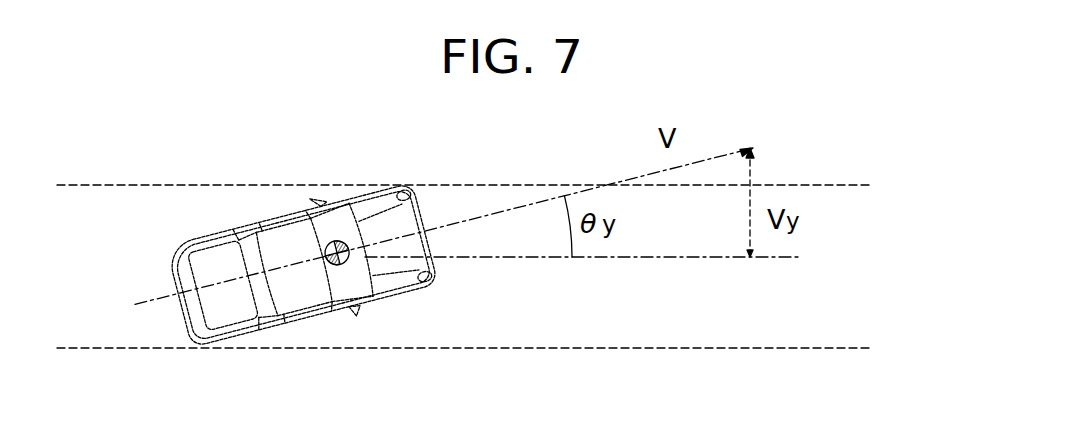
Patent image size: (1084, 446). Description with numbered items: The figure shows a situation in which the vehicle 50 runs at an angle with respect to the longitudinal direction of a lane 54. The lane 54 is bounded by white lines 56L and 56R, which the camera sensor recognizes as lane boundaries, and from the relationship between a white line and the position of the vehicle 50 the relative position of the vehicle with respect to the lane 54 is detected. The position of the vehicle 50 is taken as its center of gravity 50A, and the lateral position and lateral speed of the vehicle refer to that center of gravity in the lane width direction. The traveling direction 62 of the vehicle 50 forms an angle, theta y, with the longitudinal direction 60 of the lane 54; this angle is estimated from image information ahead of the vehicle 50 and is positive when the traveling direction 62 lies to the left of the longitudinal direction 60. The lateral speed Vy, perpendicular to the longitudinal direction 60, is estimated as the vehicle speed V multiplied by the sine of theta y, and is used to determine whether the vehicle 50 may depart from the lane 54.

The vehicle 50 is at (265, 242).
The center of gravity 50A is at (340, 241).
The lane 54 is at (503, 269).
The white line 56L is at (197, 182).
The white line 56R is at (537, 352).
The longitudinal direction 60 is at (627, 260).
The traveling direction 62 is at (517, 200).